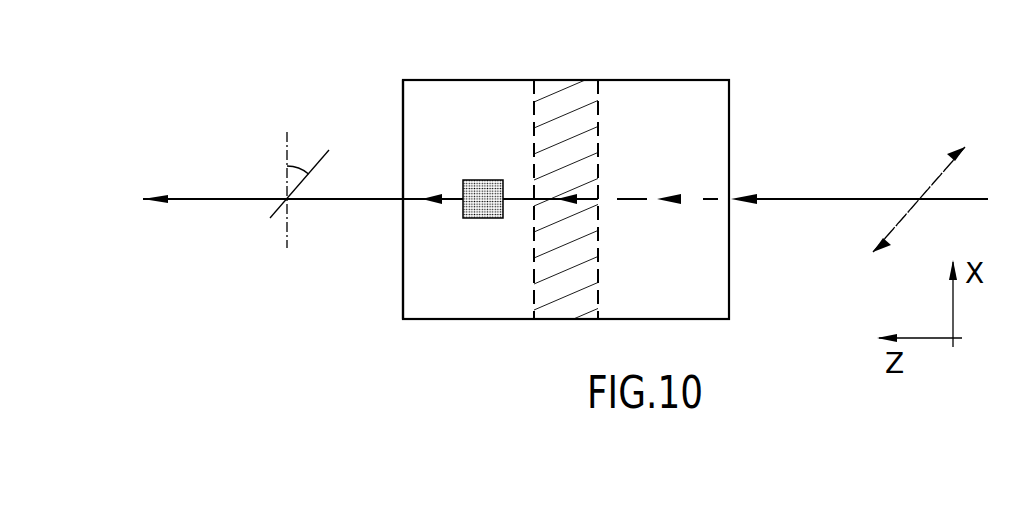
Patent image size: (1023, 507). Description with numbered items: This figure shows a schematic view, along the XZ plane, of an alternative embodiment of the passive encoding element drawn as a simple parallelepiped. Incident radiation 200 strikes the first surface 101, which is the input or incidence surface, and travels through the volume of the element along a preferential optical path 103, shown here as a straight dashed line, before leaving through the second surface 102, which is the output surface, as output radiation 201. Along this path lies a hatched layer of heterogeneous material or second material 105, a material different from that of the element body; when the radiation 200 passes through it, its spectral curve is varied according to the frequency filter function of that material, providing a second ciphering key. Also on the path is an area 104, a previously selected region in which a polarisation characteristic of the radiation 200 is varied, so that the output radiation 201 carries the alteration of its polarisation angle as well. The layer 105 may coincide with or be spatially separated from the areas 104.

The first surface 101 is at (729, 122).
The second surface 102 is at (402, 82).
The preferential optical path 103 is at (690, 203).
The area 104 is at (478, 220).
The layer of heterogeneous material or second material 105 is at (563, 145).
The radiation 200 is at (792, 195).
The transmitted radiation 201 is at (208, 197).